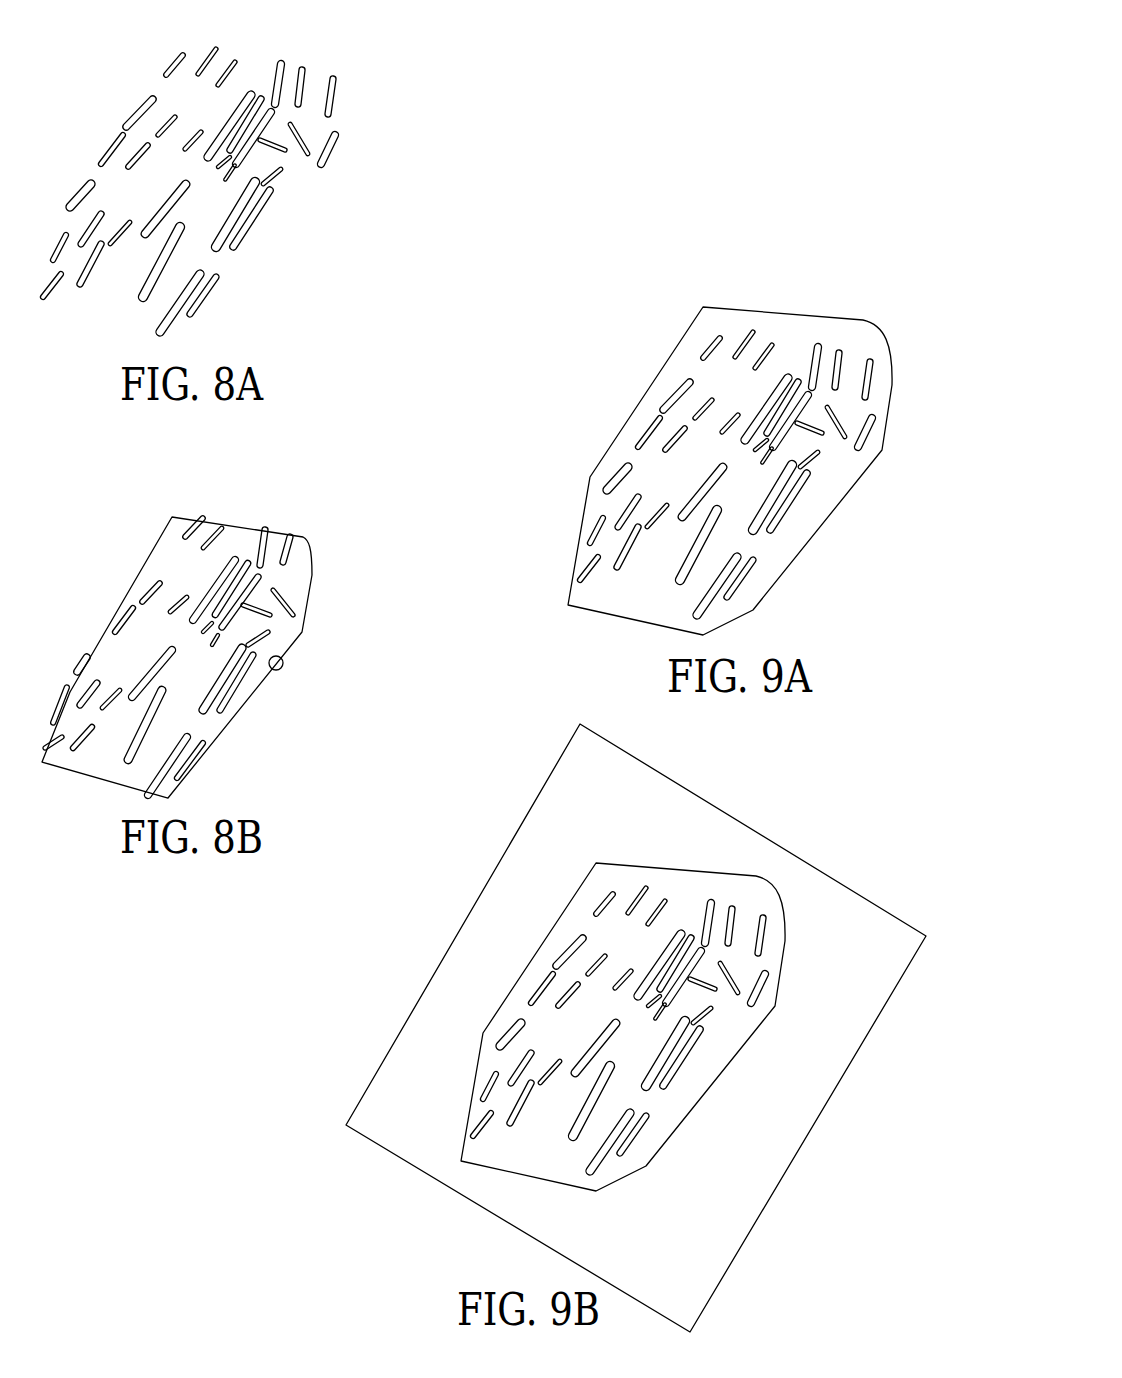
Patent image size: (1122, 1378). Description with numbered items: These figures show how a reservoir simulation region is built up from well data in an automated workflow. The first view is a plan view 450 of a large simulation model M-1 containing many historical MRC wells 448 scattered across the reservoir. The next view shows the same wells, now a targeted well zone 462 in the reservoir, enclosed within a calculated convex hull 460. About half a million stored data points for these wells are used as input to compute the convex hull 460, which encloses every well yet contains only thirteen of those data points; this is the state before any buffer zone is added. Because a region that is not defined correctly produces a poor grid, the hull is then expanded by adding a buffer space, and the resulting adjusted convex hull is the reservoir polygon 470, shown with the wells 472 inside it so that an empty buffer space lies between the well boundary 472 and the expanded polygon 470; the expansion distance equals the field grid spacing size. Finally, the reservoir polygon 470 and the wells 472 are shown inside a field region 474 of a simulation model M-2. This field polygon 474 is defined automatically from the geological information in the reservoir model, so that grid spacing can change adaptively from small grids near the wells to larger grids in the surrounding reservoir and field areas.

In FIG. 8A, the historical MRC wells 448 is at (250, 77).
In FIG. 8A, the plan view of wells 450 is at (284, 234).
In FIG. 8B, the convex hull 460 is at (283, 667).
In FIG. 8A, the targeted well zone 462 is at (269, 163).
In FIG. 8B, the targeted well zone 462 is at (263, 623).
In FIG. 9A, the reservoir polygon 470 is at (856, 518).
In FIG. 9B, the reservoir polygon 470 is at (731, 1091).
In FIG. 9A, the wells 472 is at (601, 505).
In FIG. 9B, the wells 472 is at (492, 1060).
In FIG. 9B, the field region 474 is at (752, 832).
In FIG. 8A, the simulation model M-1 is at (93, 108).
In FIG. 8B, the simulation model M-1 is at (93, 588).
In FIG. 9B, the simulation model M-2 is at (453, 877).